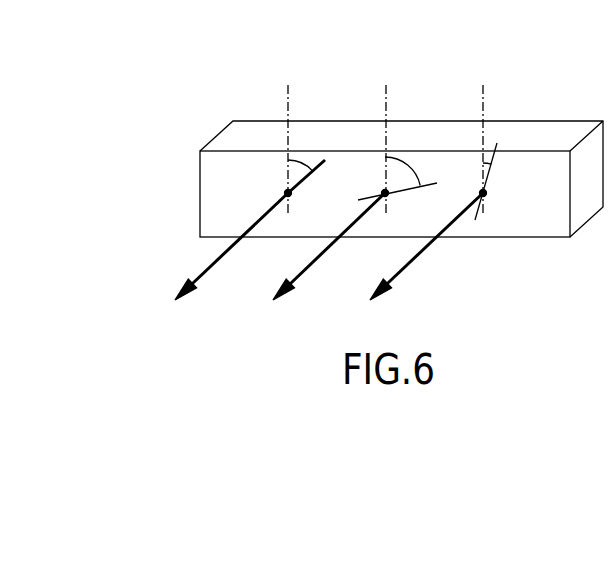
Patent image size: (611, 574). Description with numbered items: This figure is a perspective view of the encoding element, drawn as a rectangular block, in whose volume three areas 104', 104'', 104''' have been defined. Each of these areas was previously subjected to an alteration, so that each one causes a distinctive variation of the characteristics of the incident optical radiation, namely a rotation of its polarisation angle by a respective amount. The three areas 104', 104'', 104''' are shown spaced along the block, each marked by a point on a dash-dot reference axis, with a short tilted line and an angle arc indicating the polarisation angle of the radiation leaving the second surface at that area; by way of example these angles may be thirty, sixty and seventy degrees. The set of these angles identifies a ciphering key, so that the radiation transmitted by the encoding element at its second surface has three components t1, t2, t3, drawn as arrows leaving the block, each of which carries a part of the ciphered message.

The first area 104' is at (228, 228).
The second area 104'' is at (355, 180).
The third area 104''' is at (472, 221).
The first component t1 is at (192, 317).
The second component t2 is at (289, 317).
The third component t3 is at (386, 317).